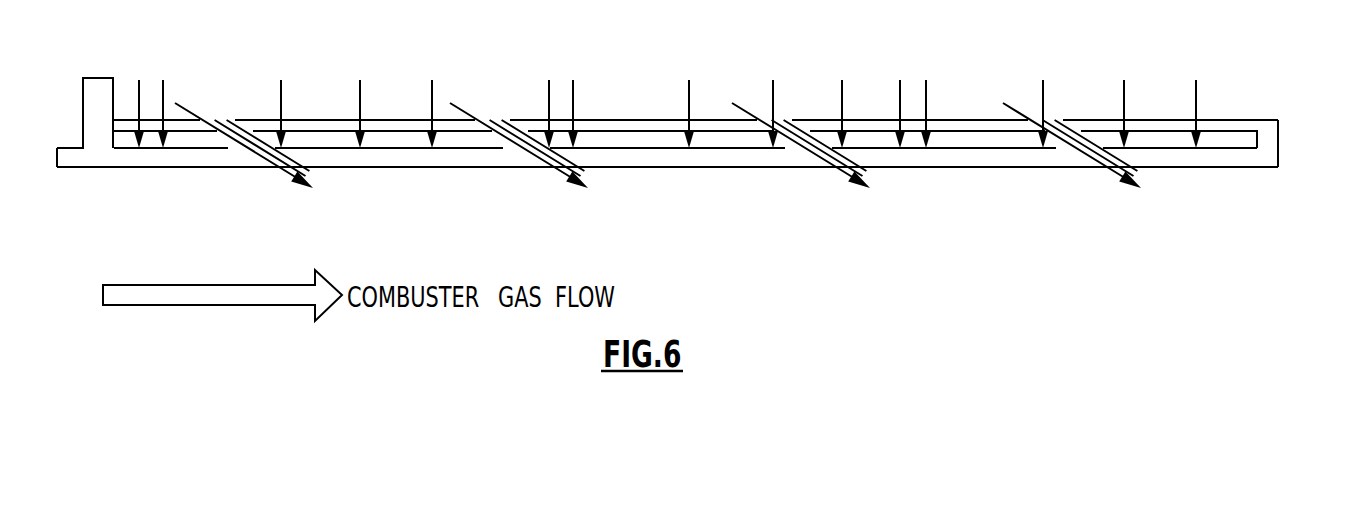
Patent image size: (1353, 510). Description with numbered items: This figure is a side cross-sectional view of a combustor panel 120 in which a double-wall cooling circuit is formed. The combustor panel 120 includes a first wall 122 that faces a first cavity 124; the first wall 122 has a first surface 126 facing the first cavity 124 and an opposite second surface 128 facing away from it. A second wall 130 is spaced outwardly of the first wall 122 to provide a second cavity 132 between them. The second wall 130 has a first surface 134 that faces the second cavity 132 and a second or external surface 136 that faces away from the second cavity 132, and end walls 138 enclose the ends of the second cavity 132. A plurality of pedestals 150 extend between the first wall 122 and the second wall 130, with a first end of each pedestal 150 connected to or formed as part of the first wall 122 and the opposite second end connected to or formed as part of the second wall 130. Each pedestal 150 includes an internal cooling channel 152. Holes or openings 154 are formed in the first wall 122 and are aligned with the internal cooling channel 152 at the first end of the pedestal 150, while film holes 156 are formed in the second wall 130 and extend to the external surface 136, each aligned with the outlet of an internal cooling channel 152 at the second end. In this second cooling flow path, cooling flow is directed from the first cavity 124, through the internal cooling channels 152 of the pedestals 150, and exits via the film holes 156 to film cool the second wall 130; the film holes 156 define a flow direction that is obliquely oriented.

The combustor panel 120 is at (159, 68).
The first wall 122 is at (1145, 125).
The first cavity 124 is at (1070, 92).
The first surface 126 is at (1222, 120).
The second surface 128 is at (1232, 132).
The second wall 130 is at (978, 160).
The second cavity 132 is at (948, 138).
The first surface 134 is at (993, 142).
The external surface 136 is at (1062, 168).
The end walls 138 is at (100, 135).
The pedestals 150 is at (252, 132).
The internal cooling channel 152 is at (217, 137).
The holes 154 is at (210, 120).
The film holes 156 is at (270, 167).